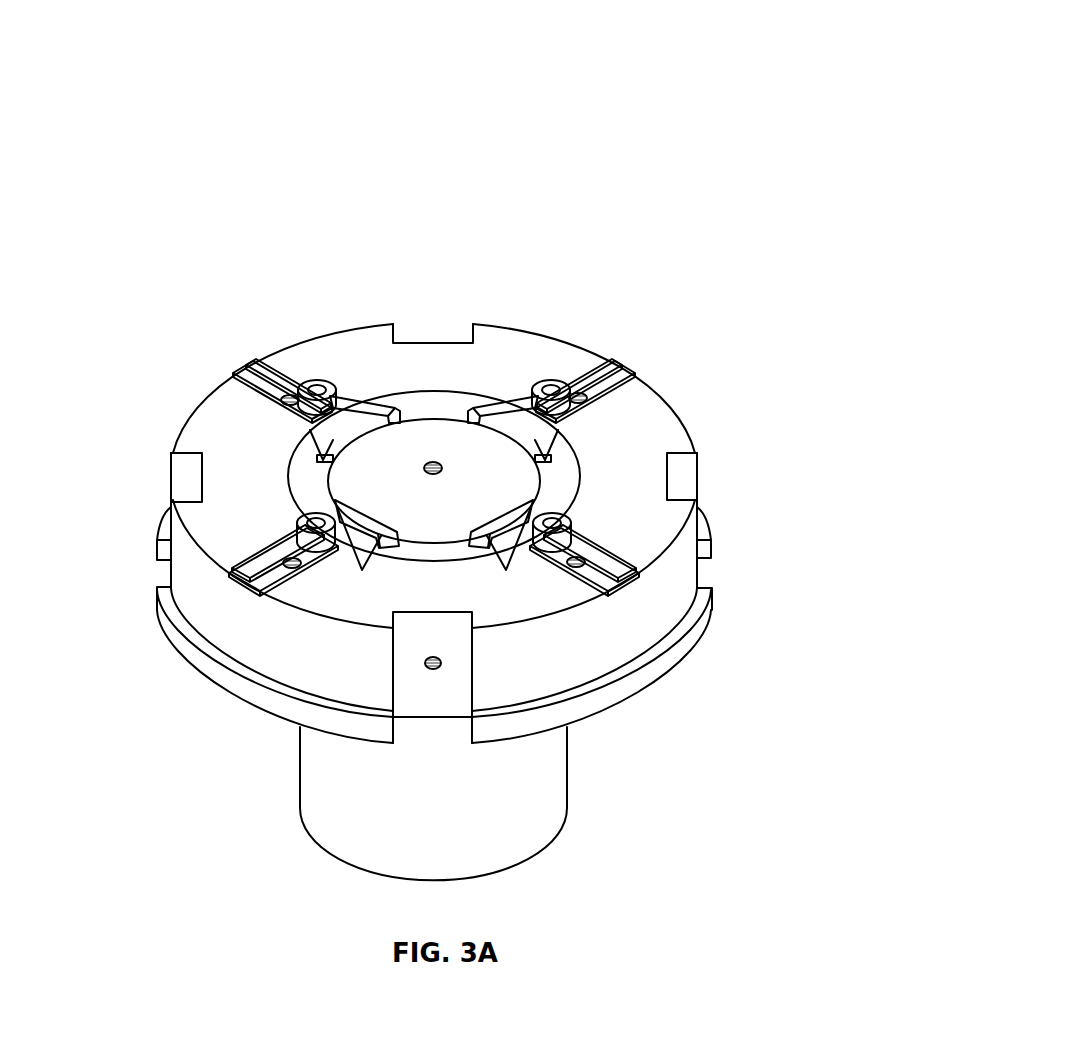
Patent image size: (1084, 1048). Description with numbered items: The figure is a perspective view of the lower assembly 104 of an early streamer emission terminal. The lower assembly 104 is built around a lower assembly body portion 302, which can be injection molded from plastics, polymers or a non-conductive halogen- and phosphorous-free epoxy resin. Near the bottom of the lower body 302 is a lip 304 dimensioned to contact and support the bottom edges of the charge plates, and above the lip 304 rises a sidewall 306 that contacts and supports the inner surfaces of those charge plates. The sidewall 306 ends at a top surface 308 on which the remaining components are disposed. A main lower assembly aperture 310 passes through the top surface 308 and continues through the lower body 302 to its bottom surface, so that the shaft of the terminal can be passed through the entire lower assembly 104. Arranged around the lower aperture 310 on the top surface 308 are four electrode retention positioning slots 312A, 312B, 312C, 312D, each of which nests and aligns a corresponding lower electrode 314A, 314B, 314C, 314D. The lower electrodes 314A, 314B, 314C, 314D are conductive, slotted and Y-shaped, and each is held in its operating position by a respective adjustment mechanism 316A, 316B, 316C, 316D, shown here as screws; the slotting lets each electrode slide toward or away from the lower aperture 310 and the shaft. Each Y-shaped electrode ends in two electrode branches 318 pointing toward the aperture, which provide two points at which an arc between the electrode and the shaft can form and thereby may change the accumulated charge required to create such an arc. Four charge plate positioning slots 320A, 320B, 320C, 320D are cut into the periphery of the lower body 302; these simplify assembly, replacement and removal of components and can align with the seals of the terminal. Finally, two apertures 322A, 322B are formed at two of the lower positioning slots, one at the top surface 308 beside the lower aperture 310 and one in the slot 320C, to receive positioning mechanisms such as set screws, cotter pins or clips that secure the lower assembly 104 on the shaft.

The lower assembly 104 is at (595, 154).
The lower assembly body portion 302 is at (517, 770).
The lip 304 is at (680, 657).
The sidewall 306 is at (650, 578).
The top surface 308 is at (677, 440).
The main lower assembly aperture 310 is at (640, 418).
The electrode retention positioning slot 312A is at (668, 374).
The electrode retention positioning slot 312B is at (657, 600).
The electrode retention positioning slot 312C is at (212, 591).
The electrode retention positioning slot 312D is at (207, 369).
The lower electrode 314A is at (625, 372).
The lower electrode 314B is at (640, 548).
The lower electrode 314C is at (244, 572).
The lower electrode 314D is at (270, 365).
The adjustment mechanism 316A is at (560, 390).
The adjustment mechanism 316B is at (560, 525).
The adjustment mechanism 316C is at (307, 514).
The adjustment mechanism 316D is at (322, 383).
The electrode branch 318 is at (484, 412).
The charge plate positioning slot 320A is at (448, 327).
The charge plate positioning slot 320B is at (657, 479).
The charge plate positioning slot 320C is at (411, 750).
The charge plate positioning slot 320D is at (150, 572).
The aperture 322A is at (429, 456).
The aperture 322B is at (410, 650).